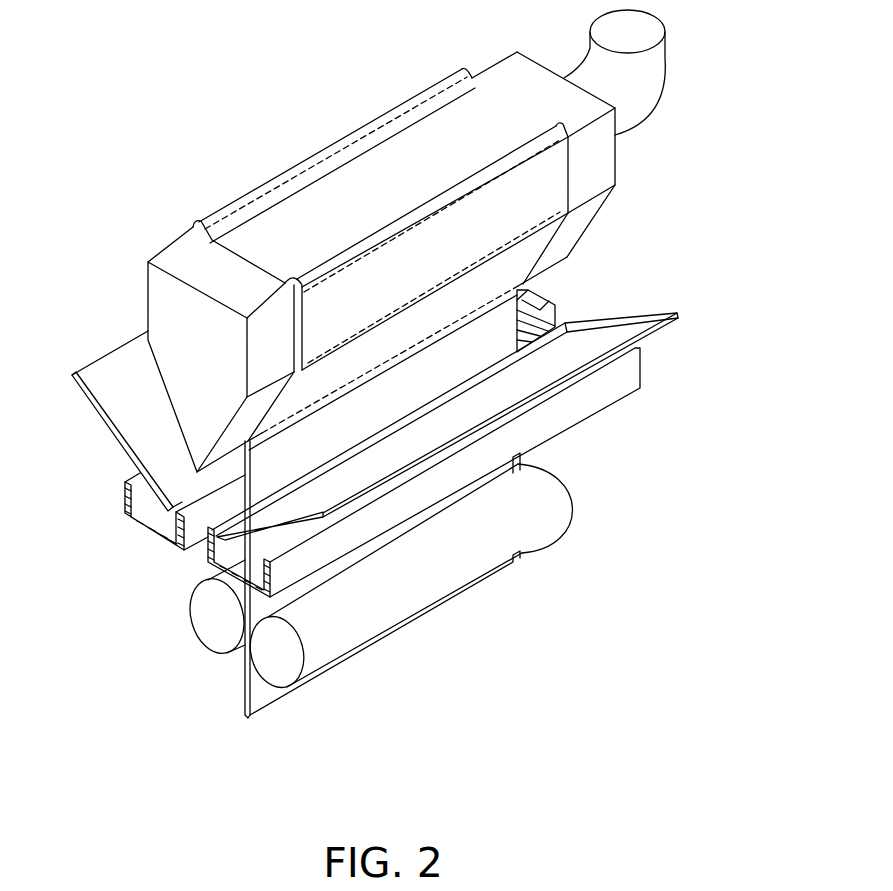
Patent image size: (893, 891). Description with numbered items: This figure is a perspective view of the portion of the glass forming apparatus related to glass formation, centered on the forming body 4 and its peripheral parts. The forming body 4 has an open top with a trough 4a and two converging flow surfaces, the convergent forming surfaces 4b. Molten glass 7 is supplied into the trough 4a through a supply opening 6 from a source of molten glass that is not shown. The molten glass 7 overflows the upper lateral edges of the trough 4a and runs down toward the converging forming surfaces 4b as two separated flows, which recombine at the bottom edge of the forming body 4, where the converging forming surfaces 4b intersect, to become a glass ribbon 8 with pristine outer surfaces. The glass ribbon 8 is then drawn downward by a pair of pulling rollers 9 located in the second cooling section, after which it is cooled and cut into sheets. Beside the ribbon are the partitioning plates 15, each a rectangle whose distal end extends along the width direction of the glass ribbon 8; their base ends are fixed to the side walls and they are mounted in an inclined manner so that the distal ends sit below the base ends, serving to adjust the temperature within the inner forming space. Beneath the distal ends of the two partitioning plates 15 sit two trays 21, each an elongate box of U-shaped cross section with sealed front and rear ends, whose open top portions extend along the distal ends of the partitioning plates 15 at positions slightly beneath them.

The forming body 4 is at (409, 242).
The trough 4a is at (523, 118).
The convergent forming surfaces 4b is at (583, 213).
The supply opening 6 is at (652, 60).
The molten glass 7 is at (359, 175).
The glass ribbon 8 is at (500, 335).
The pulling rollers 9 is at (207, 617).
The partitioning plates 15 is at (93, 377).
The trays 21 is at (124, 502).